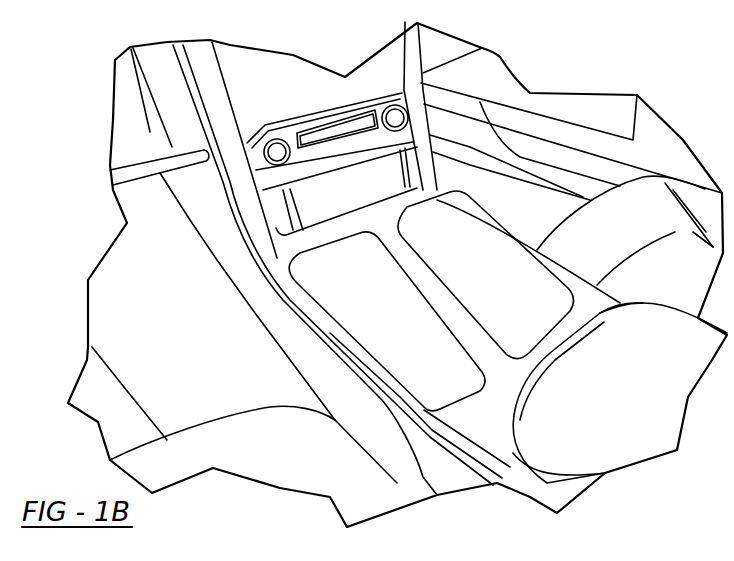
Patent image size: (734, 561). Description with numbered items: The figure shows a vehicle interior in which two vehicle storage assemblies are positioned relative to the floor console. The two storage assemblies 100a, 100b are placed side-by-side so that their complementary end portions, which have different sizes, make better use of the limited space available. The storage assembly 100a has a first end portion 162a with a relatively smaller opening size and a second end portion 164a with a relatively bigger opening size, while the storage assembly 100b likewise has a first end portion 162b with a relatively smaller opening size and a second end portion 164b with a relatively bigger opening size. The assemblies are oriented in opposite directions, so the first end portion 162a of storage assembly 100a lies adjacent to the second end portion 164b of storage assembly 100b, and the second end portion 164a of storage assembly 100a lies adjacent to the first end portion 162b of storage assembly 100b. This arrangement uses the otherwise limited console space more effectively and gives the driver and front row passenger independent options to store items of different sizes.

The storage assembly 100a is at (358, 320).
The storage assembly 100b is at (463, 292).
The first end portion 162a is at (452, 382).
The first end portion 162b is at (427, 222).
The second end portion 164a is at (323, 267).
The second end portion 164b is at (533, 324).